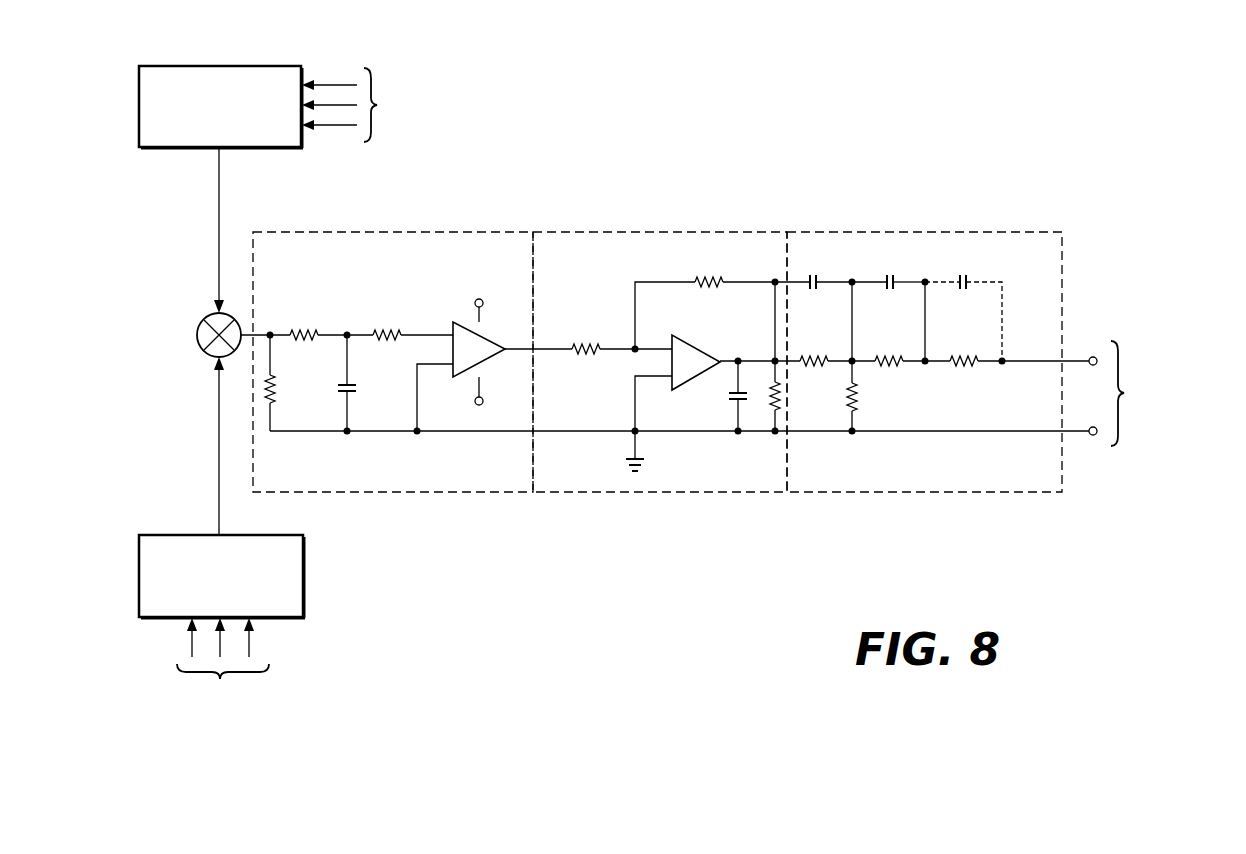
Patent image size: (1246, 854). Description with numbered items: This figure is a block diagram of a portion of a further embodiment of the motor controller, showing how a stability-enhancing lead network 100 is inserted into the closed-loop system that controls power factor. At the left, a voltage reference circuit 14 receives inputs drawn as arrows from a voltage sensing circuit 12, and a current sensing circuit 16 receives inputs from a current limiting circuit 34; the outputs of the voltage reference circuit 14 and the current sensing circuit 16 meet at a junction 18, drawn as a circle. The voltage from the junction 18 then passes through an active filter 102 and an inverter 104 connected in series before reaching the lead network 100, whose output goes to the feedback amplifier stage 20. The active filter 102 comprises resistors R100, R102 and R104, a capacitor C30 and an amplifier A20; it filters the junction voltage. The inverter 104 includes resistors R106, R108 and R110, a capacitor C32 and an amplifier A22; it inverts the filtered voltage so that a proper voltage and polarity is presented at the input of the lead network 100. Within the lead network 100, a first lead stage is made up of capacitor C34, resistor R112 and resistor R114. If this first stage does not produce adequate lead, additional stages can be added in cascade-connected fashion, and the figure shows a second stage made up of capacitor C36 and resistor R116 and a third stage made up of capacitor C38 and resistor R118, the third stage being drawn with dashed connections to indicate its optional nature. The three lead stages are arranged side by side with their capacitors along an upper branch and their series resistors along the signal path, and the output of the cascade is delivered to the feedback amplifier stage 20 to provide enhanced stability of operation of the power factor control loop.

The voltage sensing circuit 12 is at (390, 106).
The voltage reference circuit 14 is at (139, 128).
The current sensing circuit 16 is at (304, 578).
The junction 18 is at (202, 325).
The feedback amplifier stage 20 is at (1167, 393).
The current limiting circuit 34 is at (212, 685).
The lead network 100 is at (952, 232).
The active filter 102 is at (451, 232).
The inverter 104 is at (667, 232).
The resistor R100 is at (291, 383).
The resistor R102 is at (308, 324).
The resistor R104 is at (391, 324).
The resistor R106 is at (581, 337).
The resistor R108 is at (713, 294).
The resistor R110 is at (797, 396).
The resistor R112 is at (816, 350).
The resistor R114 is at (874, 396).
The resistor R116 is at (892, 350).
The resistor R118 is at (967, 350).
The capacitor C30 is at (362, 383).
The capacitor C32 is at (723, 396).
The capacitor C34 is at (817, 294).
The capacitor C36 is at (892, 294).
The capacitor C38 is at (963, 318).
The amplifier A20 is at (488, 351).
The amplifier A22 is at (696, 362).